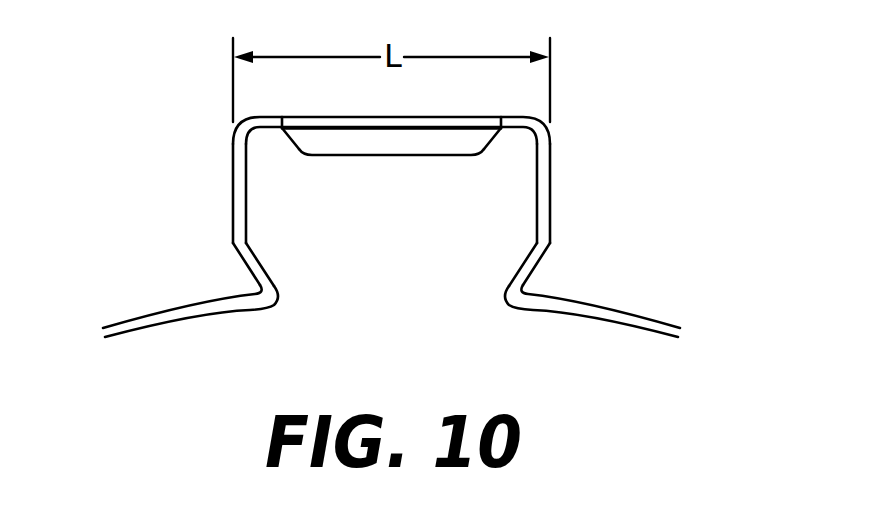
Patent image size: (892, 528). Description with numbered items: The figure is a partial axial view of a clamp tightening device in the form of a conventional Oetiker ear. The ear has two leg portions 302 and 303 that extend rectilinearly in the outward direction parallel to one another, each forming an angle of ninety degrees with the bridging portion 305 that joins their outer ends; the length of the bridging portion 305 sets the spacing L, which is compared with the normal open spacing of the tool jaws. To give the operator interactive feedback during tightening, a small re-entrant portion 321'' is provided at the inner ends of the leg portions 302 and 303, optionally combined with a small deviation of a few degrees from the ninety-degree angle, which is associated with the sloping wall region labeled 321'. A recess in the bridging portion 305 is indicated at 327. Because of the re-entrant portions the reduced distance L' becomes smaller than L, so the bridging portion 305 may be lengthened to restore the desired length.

The leg portion 302 is at (221, 159).
The leg portion 303 is at (562, 161).
The bridging portion 305 is at (340, 118).
The recess bottom surface 327 is at (393, 140).
The inclined wall portion 321' is at (392, 227).
The re-entrant portion 321'' is at (388, 294).